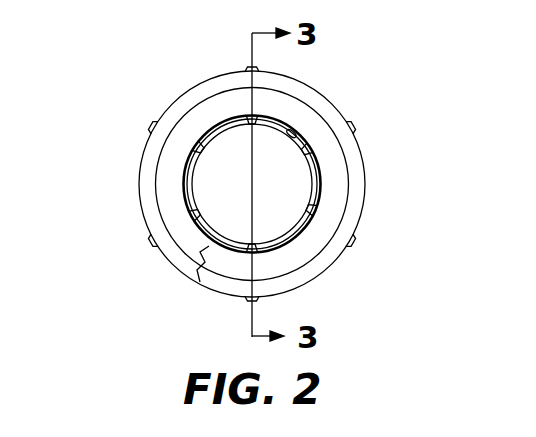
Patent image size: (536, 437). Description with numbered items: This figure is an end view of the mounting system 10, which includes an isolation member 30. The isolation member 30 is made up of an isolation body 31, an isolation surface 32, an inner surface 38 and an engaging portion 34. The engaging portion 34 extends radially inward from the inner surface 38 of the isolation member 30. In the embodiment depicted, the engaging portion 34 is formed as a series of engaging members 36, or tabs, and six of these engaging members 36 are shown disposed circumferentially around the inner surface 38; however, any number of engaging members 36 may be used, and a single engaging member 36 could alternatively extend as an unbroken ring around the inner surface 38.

The mounting system 10 is at (137, 176).
The isolation member 30 is at (242, 184).
The isolation body 31 is at (203, 257).
The isolation surface 32 is at (147, 242).
The engaging portion 34 is at (335, 149).
The engaging members 36 is at (249, 114).
The inner surface 38 is at (303, 130).